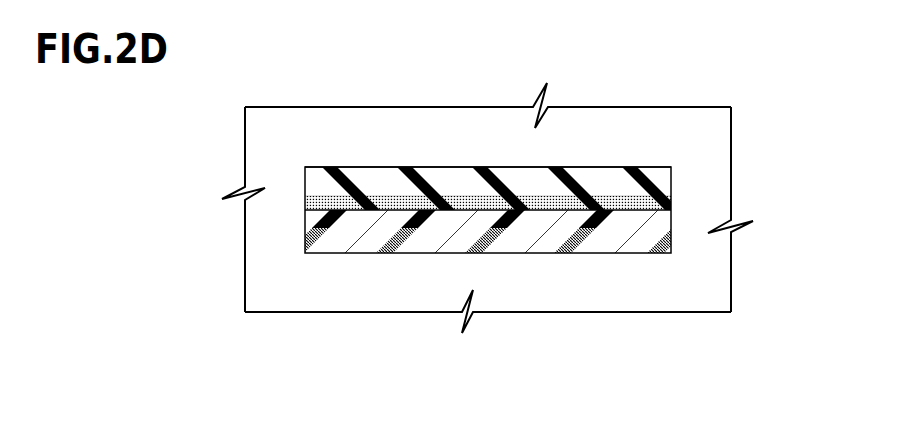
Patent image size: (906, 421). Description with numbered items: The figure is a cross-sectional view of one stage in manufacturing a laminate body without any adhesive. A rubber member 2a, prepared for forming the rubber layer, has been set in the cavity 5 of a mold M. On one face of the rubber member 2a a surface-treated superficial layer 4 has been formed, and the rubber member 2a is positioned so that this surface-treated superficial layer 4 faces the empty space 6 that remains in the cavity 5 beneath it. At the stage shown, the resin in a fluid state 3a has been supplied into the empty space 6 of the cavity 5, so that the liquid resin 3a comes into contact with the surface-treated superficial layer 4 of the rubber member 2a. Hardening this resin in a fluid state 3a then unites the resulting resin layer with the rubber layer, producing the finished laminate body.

The mold M is at (702, 157).
The cavity 5 is at (310, 177).
The rubber member 2a is at (597, 175).
The surface-treated superficial layer 4 is at (628, 207).
The empty space 6 is at (468, 243).
The resin in a fluid state 3a is at (662, 225).